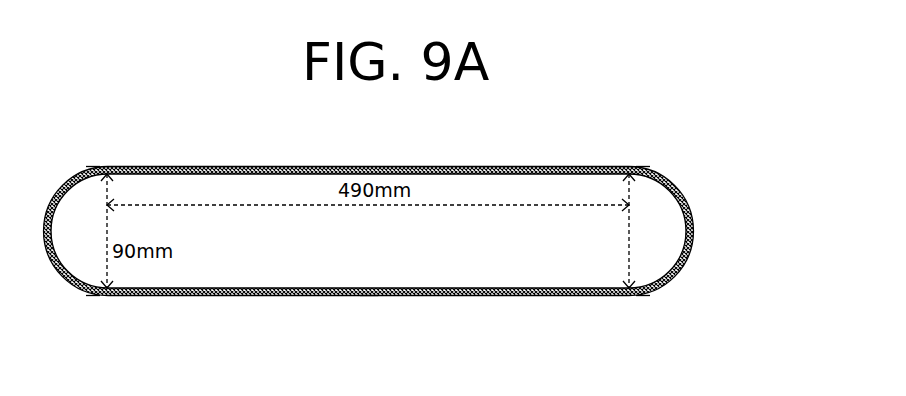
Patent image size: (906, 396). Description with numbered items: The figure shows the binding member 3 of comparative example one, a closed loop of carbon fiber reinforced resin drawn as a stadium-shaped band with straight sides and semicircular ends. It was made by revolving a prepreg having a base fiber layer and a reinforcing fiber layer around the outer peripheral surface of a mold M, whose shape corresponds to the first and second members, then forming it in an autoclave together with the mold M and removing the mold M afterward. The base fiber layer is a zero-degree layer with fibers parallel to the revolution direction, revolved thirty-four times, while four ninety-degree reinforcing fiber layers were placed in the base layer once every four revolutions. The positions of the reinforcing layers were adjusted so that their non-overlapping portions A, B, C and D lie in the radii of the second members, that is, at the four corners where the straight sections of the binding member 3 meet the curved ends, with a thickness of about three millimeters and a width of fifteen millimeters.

The binding member 3 is at (692, 220).
The non-overlapping portion A is at (74, 154).
The non-overlapping portion B is at (85, 310).
The non-overlapping portion C is at (654, 307).
The non-overlapping portion D is at (644, 152).
The mold M is at (365, 270).